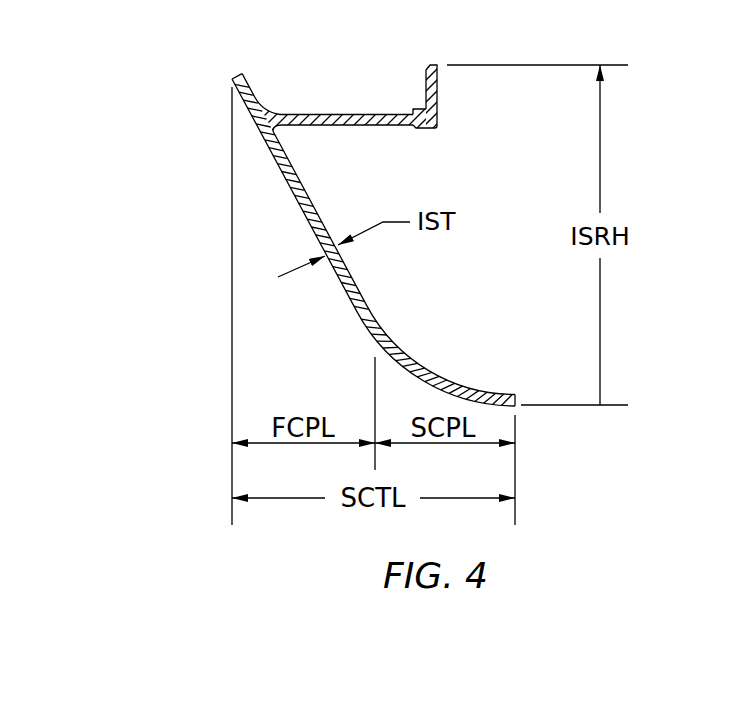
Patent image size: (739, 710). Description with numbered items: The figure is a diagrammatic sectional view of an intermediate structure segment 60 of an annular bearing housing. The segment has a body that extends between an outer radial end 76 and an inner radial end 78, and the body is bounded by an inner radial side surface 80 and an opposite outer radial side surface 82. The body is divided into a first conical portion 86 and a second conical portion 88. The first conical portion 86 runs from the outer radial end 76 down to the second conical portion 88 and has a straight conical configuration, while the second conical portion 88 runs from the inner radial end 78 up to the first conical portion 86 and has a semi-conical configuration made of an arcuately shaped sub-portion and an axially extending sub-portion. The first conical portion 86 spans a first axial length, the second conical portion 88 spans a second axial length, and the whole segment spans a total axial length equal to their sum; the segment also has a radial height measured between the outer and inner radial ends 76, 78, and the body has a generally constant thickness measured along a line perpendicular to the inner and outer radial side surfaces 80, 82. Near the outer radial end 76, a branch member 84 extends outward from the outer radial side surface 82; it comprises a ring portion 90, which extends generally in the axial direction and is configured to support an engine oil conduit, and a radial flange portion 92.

The intermediate structure segment 60 is at (335, 222).
The outer radial end 76 is at (232, 79).
The inner radial end 78 is at (518, 397).
The inner radial side surface 80 is at (369, 222).
The outer radial side surface 82 is at (310, 202).
The branch member 84 is at (466, 109).
The first conical portion 86 is at (298, 235).
The second conical portion 88 is at (456, 374).
The ring portion 90 is at (370, 113).
The radial flange portion 92 is at (438, 107).